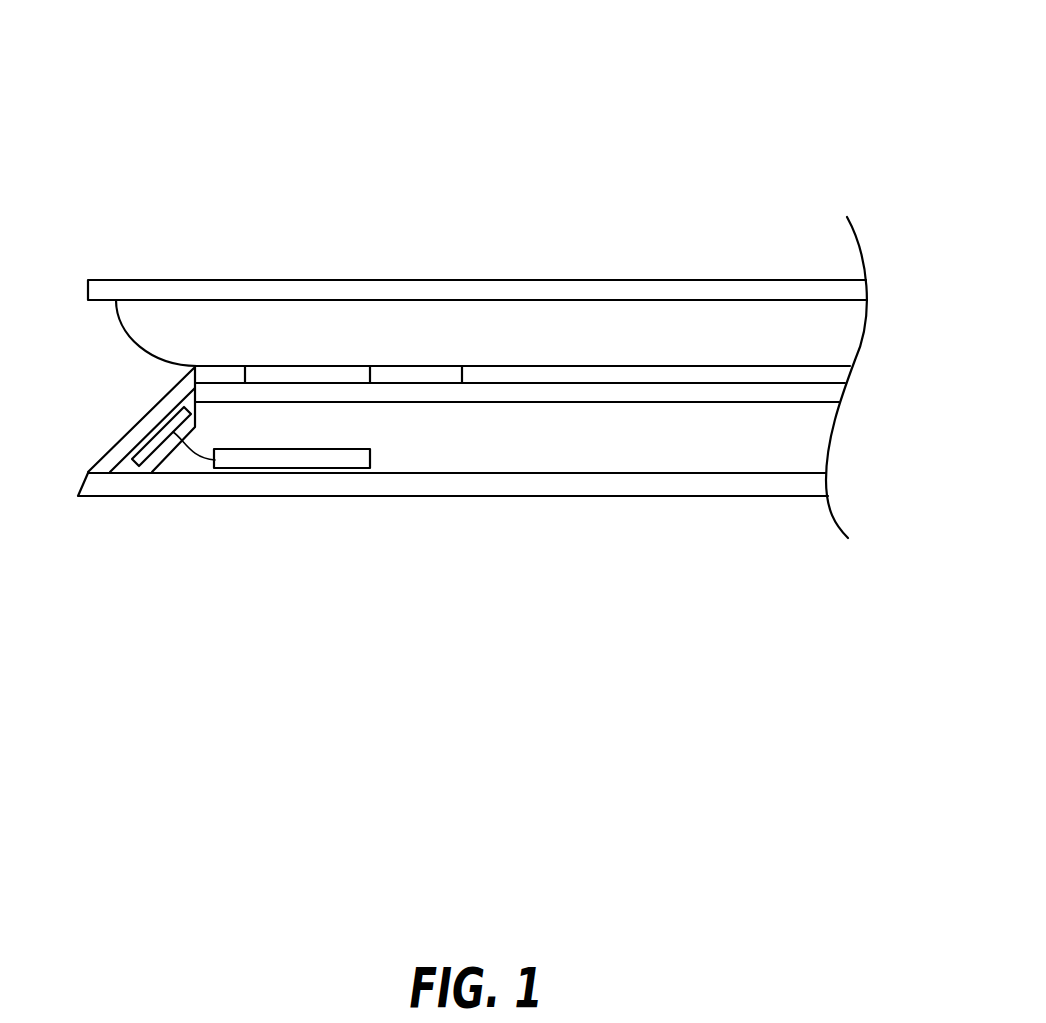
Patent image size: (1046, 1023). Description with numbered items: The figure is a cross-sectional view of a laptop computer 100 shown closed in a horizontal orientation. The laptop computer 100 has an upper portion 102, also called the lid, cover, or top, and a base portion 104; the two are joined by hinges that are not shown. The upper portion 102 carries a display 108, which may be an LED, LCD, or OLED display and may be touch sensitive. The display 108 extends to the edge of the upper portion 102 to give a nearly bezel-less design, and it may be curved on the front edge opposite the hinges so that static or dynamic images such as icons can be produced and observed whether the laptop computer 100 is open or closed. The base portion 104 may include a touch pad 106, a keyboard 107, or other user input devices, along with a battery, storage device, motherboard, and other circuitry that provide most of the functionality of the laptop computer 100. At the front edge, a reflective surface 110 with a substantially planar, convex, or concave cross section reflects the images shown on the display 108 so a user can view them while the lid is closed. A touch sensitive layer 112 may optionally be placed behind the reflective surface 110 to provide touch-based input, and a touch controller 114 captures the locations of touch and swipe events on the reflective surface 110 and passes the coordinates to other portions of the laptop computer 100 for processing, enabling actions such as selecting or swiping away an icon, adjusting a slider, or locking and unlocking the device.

The laptop computer 100 is at (817, 77).
The upper portion 102 is at (623, 280).
The base portion 104 is at (710, 497).
The touch pad 106 is at (360, 373).
The keyboard 107 is at (500, 373).
The display 108 is at (848, 335).
The reflective surface 110 is at (118, 445).
The touch sensitive layer 112 is at (155, 443).
The touch controller 114 is at (285, 458).